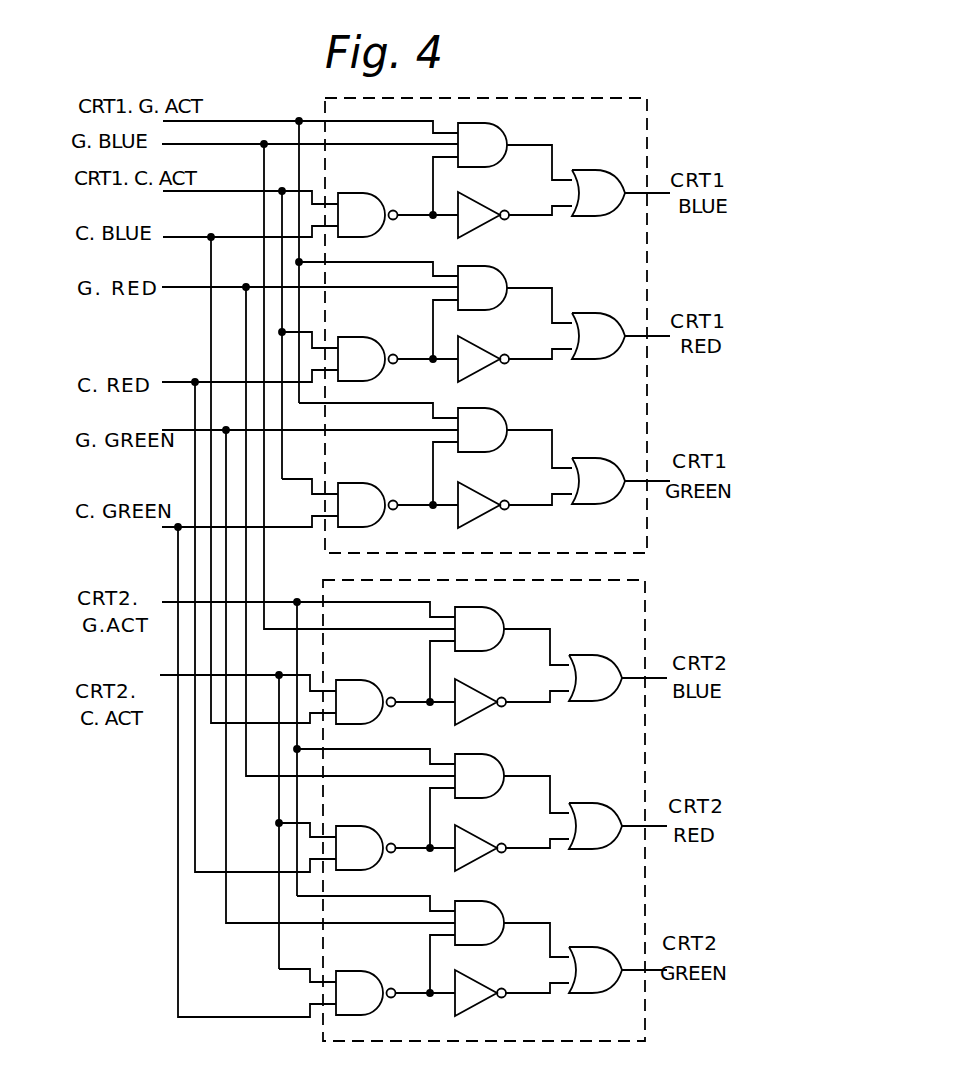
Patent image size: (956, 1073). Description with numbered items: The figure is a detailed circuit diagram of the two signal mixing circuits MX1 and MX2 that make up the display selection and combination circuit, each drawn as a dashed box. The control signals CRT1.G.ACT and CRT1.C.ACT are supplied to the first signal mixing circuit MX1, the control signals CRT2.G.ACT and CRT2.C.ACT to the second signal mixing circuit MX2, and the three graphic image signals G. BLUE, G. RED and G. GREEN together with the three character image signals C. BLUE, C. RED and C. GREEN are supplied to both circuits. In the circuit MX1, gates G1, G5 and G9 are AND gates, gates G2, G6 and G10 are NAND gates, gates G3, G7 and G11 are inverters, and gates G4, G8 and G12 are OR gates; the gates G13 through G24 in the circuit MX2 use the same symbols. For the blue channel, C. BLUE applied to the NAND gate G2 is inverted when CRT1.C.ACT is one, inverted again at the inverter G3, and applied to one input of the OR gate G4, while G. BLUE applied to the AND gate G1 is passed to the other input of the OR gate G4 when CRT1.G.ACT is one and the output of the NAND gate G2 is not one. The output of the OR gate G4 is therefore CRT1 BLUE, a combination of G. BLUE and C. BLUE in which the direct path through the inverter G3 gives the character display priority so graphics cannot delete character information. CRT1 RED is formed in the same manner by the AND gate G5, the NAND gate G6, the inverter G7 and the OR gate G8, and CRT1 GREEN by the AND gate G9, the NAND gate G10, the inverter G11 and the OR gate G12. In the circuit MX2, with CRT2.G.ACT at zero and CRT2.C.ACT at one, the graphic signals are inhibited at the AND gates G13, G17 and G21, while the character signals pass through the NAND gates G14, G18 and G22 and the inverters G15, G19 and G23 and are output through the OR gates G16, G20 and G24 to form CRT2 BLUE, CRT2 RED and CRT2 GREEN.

The signal mixing circuit MX1 is at (647, 138).
The signal mixing circuit MX2 is at (645, 602).
The AND gate G1 is at (482, 145).
The NAND gate G2 is at (368, 215).
The inverter G3 is at (483, 215).
The OR gate G4 is at (598, 193).
The AND gate G5 is at (482, 288).
The NAND gate G6 is at (368, 359).
The inverter G7 is at (483, 359).
The OR gate G8 is at (598, 336).
The AND gate G9 is at (482, 430).
The NAND gate G10 is at (368, 505).
The inverter G11 is at (483, 505).
The OR gate G12 is at (598, 481).
The AND gate G13 is at (479, 629).
The NAND gate G14 is at (366, 702).
The inverter G15 is at (480, 702).
The OR gate G16 is at (595, 678).
The AND gate G17 is at (479, 776).
The NAND gate G18 is at (366, 848).
The inverter G19 is at (480, 848).
The OR gate G20 is at (595, 826).
The AND gate G21 is at (479, 923).
The NAND gate G22 is at (366, 993).
The inverter G23 is at (480, 993).
The OR gate G24 is at (595, 970).